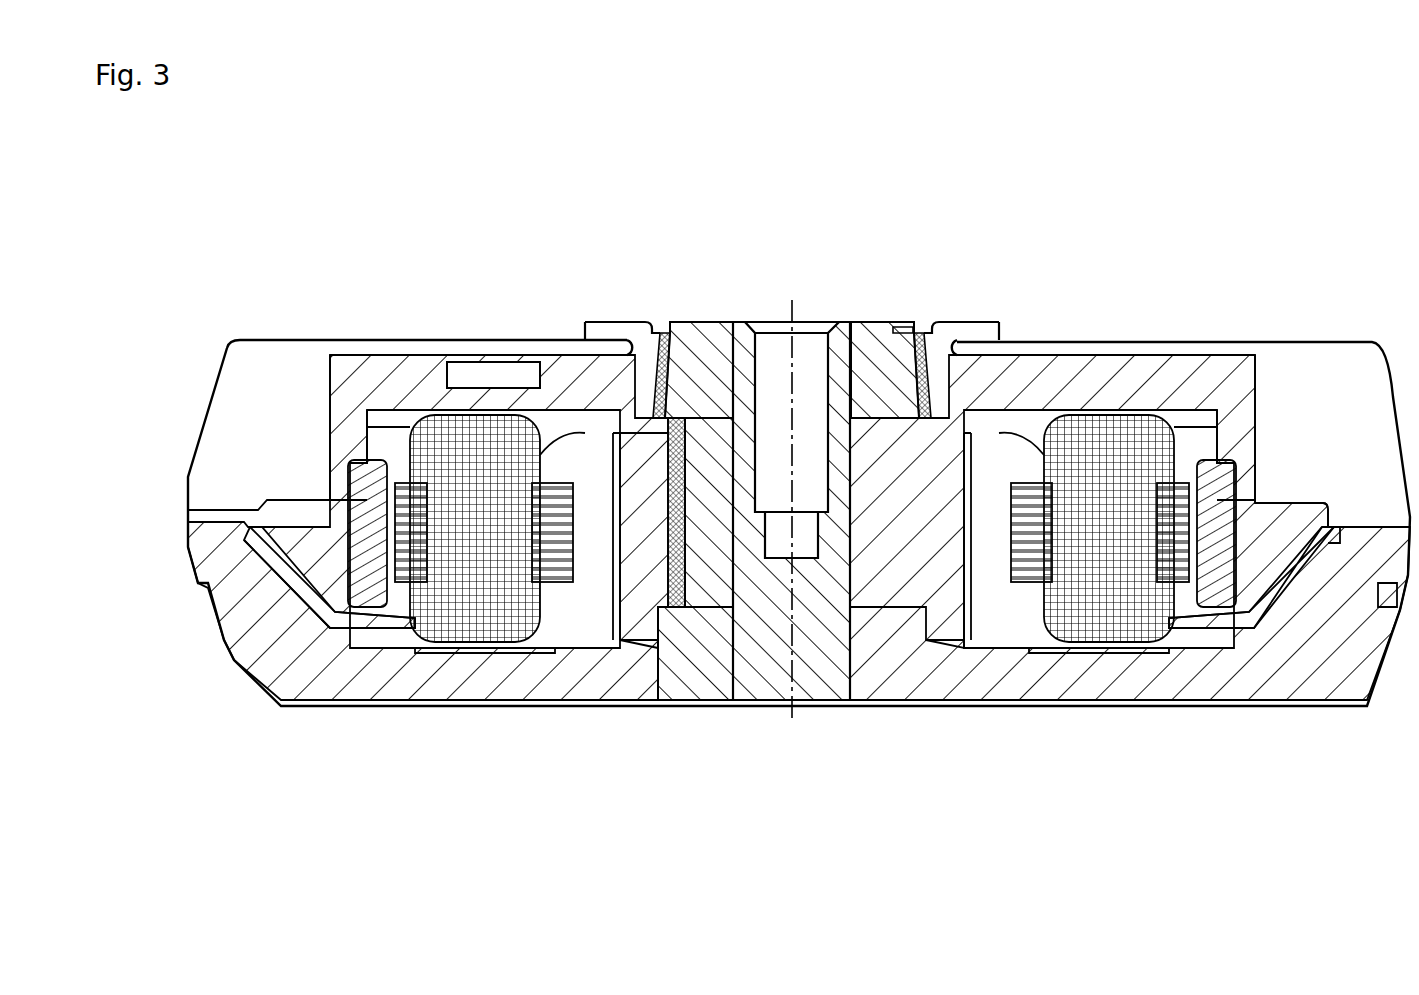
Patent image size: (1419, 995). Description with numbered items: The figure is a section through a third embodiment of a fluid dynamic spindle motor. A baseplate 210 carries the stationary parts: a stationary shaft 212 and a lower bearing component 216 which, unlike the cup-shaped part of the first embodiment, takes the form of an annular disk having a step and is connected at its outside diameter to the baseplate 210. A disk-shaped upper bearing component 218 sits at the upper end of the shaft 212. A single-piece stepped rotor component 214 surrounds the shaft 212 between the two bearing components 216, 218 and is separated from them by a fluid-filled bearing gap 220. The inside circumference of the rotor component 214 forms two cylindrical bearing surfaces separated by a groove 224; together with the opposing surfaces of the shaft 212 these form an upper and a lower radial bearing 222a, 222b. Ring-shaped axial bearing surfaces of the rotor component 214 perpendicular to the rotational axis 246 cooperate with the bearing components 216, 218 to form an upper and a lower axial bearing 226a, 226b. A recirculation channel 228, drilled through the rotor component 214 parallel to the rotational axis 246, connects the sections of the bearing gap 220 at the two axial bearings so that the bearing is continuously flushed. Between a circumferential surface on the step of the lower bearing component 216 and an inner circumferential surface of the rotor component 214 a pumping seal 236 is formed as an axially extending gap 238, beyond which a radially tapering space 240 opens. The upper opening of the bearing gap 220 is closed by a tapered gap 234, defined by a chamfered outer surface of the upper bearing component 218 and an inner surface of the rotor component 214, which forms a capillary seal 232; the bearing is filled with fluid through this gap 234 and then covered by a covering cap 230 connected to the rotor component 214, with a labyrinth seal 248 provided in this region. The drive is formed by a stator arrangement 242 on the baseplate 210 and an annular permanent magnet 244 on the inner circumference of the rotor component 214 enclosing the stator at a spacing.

The baseplate 210 is at (1217, 672).
The shaft 212 is at (822, 640).
The rotor component 214 is at (1158, 368).
The bearing component 216 is at (935, 630).
The bearing component 218 is at (722, 400).
The bearing gap 220 is at (748, 470).
The radial bearing 222a is at (866, 395).
The radial bearing 222b is at (770, 600).
The groove 224 is at (650, 655).
The axial bearing 226a is at (663, 385).
The axial bearing 226b is at (701, 605).
The recirculation channel 228 is at (637, 400).
The covering cap 230 is at (665, 445).
The capillary seal 232 is at (962, 348).
The gap (tapered) 234 is at (925, 340).
The pumping seal 236 is at (943, 645).
The gap 238 is at (882, 655).
The space 240 is at (597, 648).
The stator arrangement 242 is at (1120, 610).
The magnet 244 is at (1220, 543).
The rotational axis 246 is at (797, 312).
The labyrinth seal 248 is at (700, 380).